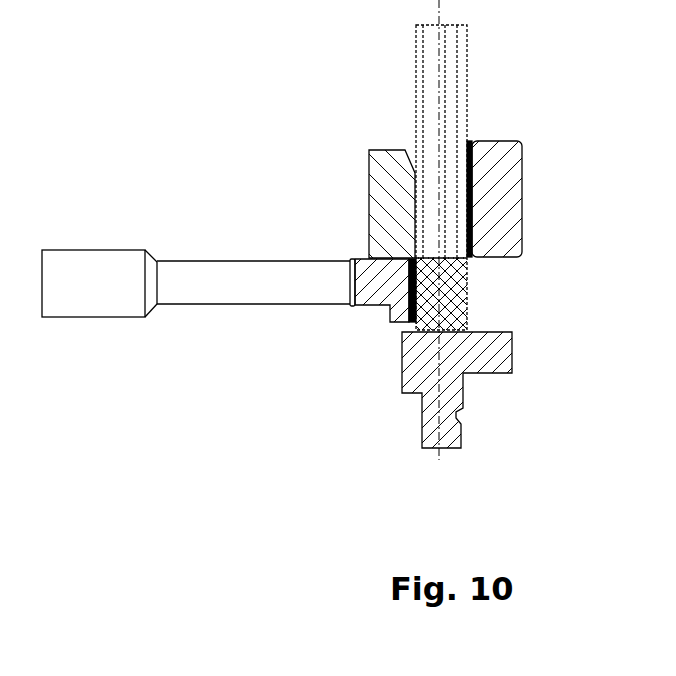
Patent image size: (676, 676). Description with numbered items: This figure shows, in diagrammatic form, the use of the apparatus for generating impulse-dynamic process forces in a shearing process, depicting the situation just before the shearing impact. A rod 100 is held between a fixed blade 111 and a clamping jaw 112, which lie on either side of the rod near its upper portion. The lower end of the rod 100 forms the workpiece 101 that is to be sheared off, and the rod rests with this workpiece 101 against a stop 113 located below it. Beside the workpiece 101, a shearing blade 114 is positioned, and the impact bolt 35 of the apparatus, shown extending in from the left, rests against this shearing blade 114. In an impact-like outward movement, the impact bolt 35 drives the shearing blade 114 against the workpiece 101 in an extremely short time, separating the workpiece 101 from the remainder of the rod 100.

The impact bolt 35 is at (213, 252).
The rod 100 is at (458, 85).
The workpiece 101 is at (462, 297).
The fixed blade 111 is at (507, 183).
The clamping jaw 112 is at (388, 173).
The stop 113 is at (477, 369).
The shearing blade 114 is at (388, 288).